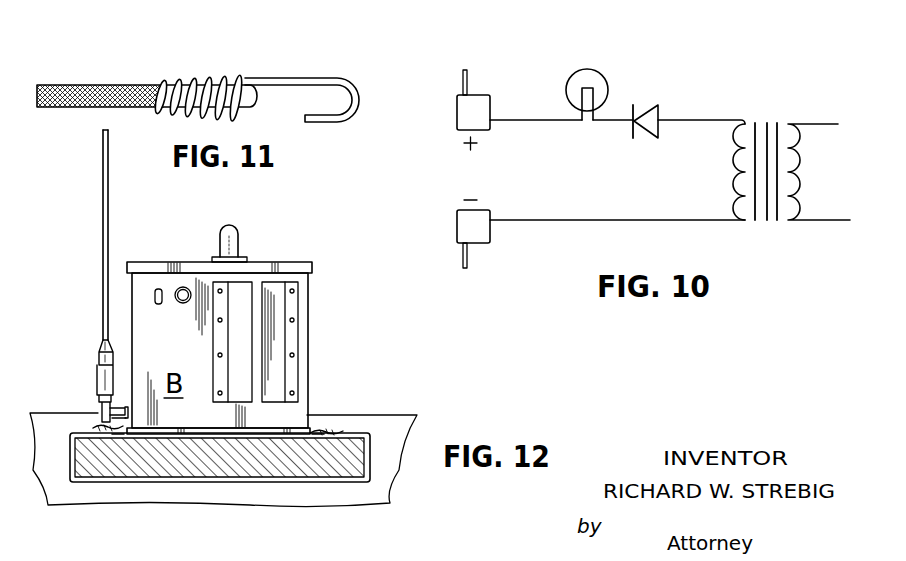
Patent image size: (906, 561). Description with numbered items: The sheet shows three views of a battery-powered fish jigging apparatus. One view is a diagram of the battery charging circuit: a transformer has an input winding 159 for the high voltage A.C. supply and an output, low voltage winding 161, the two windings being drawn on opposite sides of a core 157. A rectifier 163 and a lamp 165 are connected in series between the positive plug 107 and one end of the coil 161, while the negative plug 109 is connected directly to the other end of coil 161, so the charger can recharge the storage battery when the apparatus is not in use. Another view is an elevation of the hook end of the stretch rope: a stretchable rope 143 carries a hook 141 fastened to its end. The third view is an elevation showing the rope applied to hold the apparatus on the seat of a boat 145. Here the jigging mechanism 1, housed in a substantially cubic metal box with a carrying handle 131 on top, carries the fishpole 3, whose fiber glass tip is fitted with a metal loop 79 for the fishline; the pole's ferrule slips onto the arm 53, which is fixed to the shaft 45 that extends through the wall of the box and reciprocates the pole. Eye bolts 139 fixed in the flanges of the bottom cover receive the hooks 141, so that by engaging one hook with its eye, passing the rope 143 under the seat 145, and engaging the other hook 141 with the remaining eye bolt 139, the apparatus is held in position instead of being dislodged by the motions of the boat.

In FIG. 12, the jigging mechanism 1 is at (314, 291).
In FIG. 12, the fishpole 3 is at (100, 262).
In FIG. 12, the shaft 45 is at (126, 405).
In FIG. 12, the arm 53 is at (96, 410).
In FIG. 12, the metal tip or loop 79 is at (104, 130).
In FIG. 10, the positive plug 107 is at (469, 82).
In FIG. 10, the negative plug 109 is at (467, 256).
In FIG. 12, the carrying handle 131 is at (237, 236).
In FIG. 12, the eye bolts 139 is at (118, 438).
In FIG. 11, the hooks 141 is at (348, 124).
In FIG. 12, the hooks 141 is at (118, 436).
In FIG. 11, the stretchable rope 143 is at (117, 86).
In FIG. 12, the stretchable rope 143 is at (230, 481).
In FIG. 12, the seat of a boat 145 is at (355, 458).
In FIG. 10, the transformer core 157 is at (771, 118).
In FIG. 10, the input winding 159 is at (800, 183).
In FIG. 10, the output low voltage winding 161 is at (733, 178).
In FIG. 10, the rectifier 163 is at (658, 109).
In FIG. 10, the lamp 165 is at (601, 75).